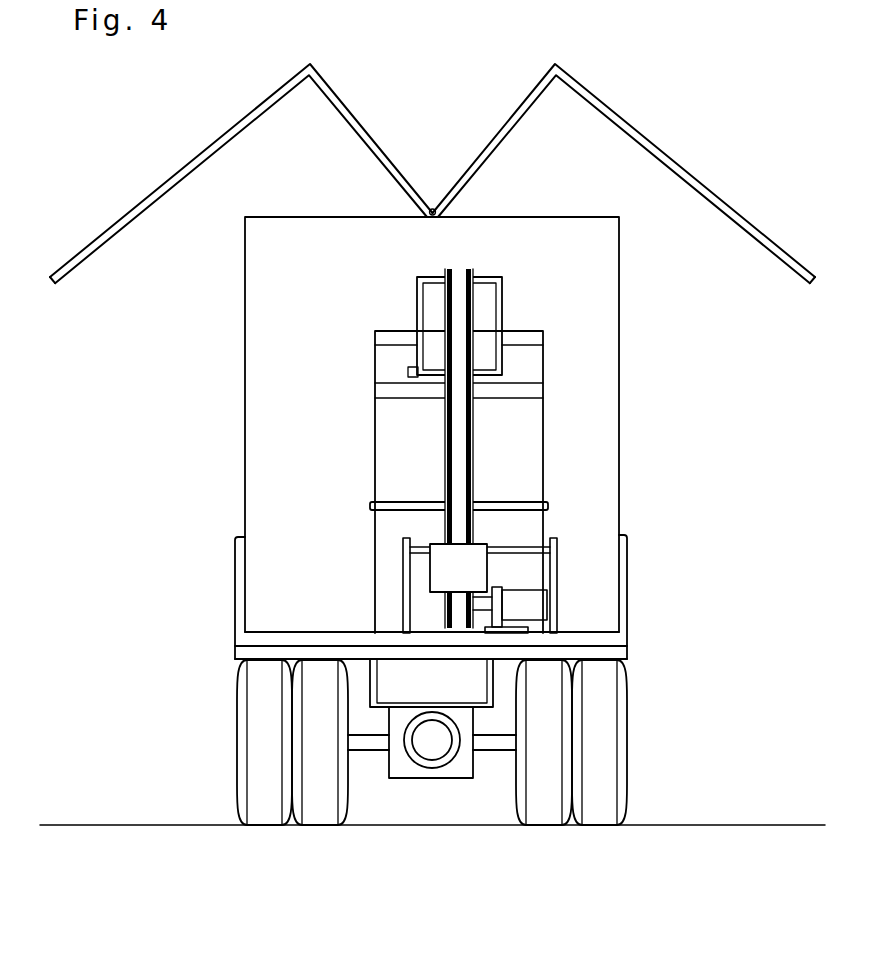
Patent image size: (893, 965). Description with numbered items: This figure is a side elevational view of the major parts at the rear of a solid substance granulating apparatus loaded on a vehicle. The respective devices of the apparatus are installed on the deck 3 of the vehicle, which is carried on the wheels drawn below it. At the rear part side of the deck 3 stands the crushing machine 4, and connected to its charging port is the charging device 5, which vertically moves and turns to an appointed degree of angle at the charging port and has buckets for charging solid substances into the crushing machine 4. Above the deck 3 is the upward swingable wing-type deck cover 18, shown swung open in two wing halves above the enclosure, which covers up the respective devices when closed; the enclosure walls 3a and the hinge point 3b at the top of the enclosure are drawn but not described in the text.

The deck 3 is at (588, 638).
The box body of carriage 3a is at (245, 360).
The hinge at top of box body 3b is at (432, 209).
The crushing machine 4 is at (515, 419).
The charging device 5 is at (458, 454).
The deck cover 18 is at (153, 192).